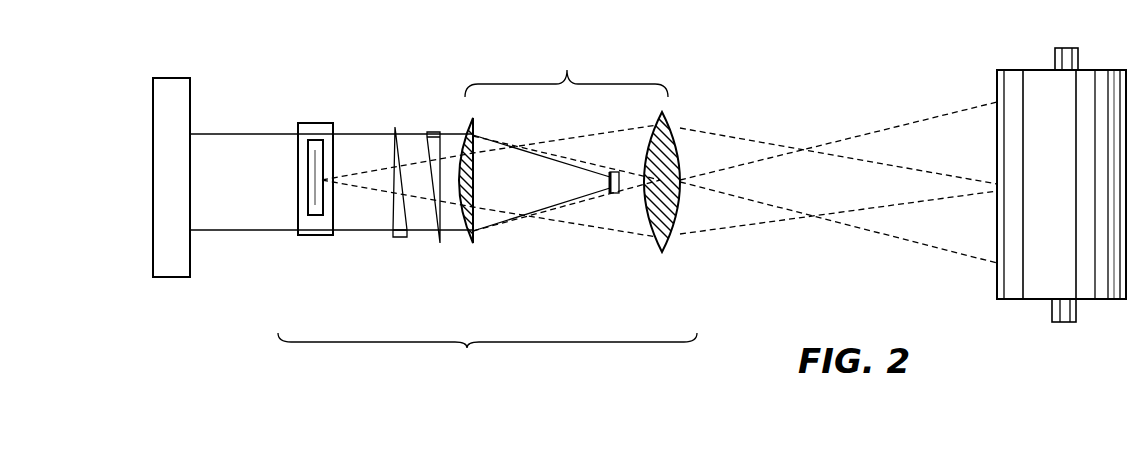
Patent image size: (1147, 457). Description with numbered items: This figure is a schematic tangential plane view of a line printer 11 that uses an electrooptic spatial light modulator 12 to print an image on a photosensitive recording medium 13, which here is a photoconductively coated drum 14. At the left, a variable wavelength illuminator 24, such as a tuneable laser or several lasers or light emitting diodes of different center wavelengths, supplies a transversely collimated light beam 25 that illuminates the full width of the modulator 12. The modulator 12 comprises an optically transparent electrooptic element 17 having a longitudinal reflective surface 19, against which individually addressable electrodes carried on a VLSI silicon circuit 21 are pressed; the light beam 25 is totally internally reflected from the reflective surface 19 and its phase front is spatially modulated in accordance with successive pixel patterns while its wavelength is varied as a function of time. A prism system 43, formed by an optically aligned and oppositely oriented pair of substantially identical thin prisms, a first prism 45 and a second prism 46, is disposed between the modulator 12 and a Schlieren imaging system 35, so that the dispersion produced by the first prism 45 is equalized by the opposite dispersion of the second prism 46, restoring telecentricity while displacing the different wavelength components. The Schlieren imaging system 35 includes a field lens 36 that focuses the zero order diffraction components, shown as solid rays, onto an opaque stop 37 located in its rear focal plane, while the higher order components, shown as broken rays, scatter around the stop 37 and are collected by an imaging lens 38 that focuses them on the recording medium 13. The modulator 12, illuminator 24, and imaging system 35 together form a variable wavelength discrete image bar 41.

The line printer 11 is at (795, 135).
The electrooptic spatial light modulator 12 is at (289, 174).
The photosensitive recording medium 13 is at (1025, 218).
The photoconductively coated drum 14 is at (1037, 163).
The electrooptic element 17 is at (317, 238).
The reflective surface 19 is at (303, 150).
The VLSI silicon circuit 21 is at (308, 178).
The variable wavelength illuminator 24 is at (153, 125).
The light beam 25 is at (270, 203).
The Schlieren imaging system 35 is at (575, 170).
The field lens 36 is at (460, 243).
The opaque stop 37 is at (615, 196).
The imaging lens 38 is at (679, 150).
The variable wavelength discrete image bar 41 is at (487, 355).
The prism system 43 is at (417, 168).
The first prism 45 is at (402, 238).
The second prism 46 is at (434, 131).